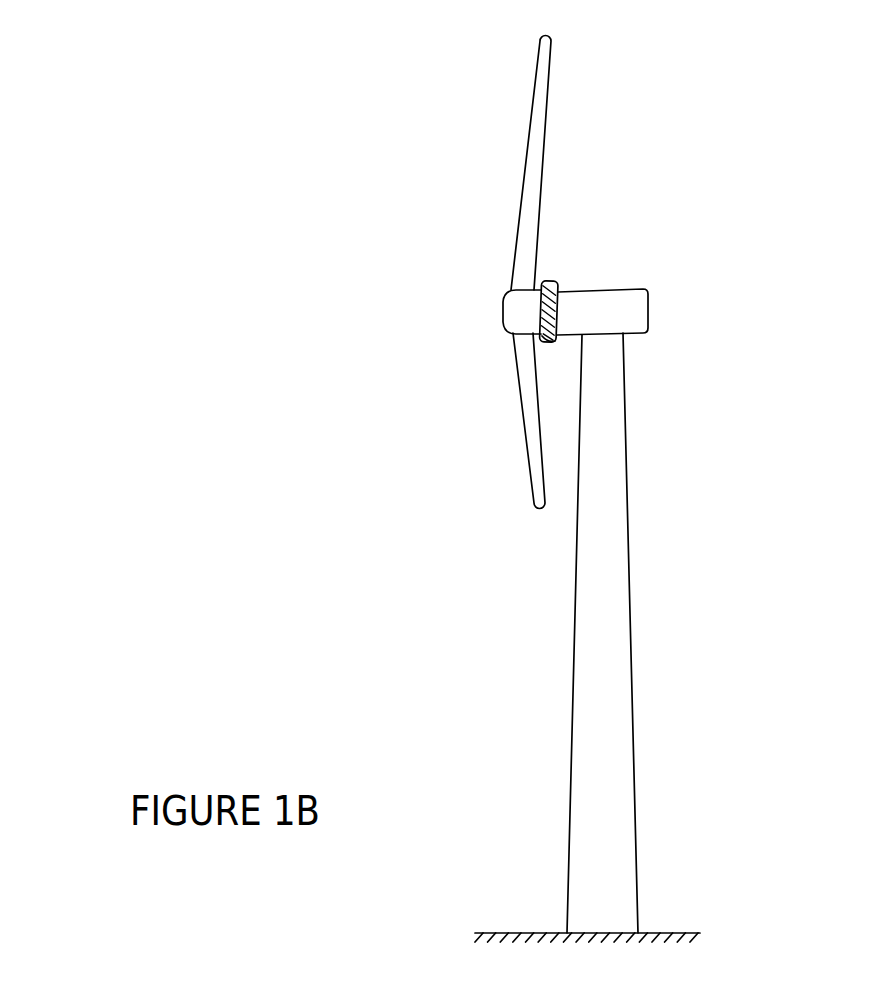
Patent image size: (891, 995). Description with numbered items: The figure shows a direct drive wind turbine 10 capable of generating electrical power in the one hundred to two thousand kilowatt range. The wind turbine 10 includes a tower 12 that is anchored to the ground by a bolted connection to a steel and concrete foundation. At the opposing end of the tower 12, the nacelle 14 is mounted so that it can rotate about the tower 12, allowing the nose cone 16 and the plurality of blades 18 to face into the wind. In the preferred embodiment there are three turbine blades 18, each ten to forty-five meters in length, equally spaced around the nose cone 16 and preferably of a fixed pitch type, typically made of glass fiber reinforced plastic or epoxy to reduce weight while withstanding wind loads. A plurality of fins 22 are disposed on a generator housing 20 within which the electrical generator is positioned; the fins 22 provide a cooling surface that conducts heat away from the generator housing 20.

The wind turbine 10 is at (75, 325).
The tower 12 is at (632, 613).
The nacelle 14 is at (648, 312).
The nose cone 16 is at (504, 327).
The blades 18 is at (527, 157).
The generator housing 20 is at (553, 281).
The fins 22 is at (547, 338).